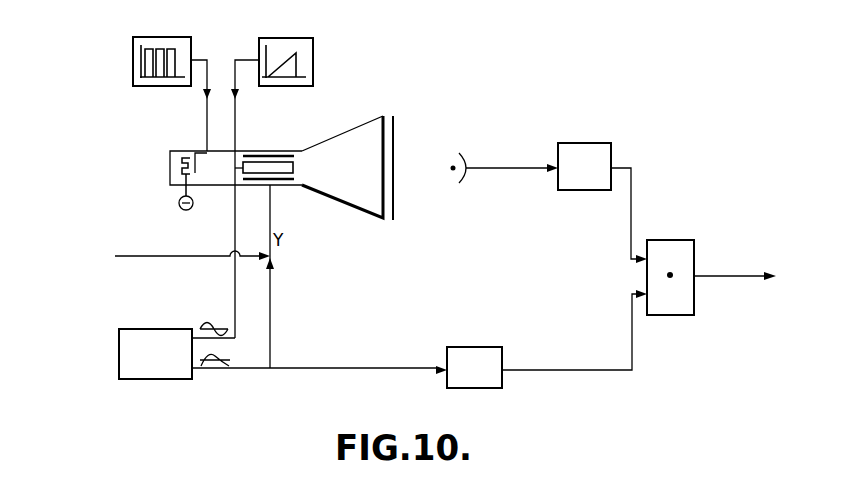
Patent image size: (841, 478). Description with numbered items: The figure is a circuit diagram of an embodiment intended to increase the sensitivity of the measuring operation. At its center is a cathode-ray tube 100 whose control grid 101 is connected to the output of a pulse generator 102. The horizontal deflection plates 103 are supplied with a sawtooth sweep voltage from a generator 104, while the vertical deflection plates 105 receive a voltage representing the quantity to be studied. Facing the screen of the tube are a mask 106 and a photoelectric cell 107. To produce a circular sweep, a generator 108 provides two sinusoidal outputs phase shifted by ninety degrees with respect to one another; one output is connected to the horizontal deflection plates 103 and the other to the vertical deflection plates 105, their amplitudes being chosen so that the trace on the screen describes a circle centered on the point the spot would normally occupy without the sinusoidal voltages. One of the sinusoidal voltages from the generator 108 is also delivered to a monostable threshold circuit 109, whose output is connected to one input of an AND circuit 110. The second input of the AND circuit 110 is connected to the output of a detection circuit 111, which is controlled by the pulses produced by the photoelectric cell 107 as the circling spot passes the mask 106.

The cathode-ray tube 100 is at (337, 136).
The control grid 101 is at (196, 150).
The pulse generator 102 is at (190, 44).
The horizontal deflection plates 103 is at (297, 170).
The sawtooth generator 104 is at (313, 46).
The vertical deflection plates 105 is at (258, 156).
The mask 106 is at (395, 147).
The photoelectric cell 107 is at (467, 157).
The sine wave generator 108 is at (177, 316).
The monostable threshold circuit 109 is at (518, 340).
The AND circuit 110 is at (688, 313).
The detection circuit 111 is at (620, 127).